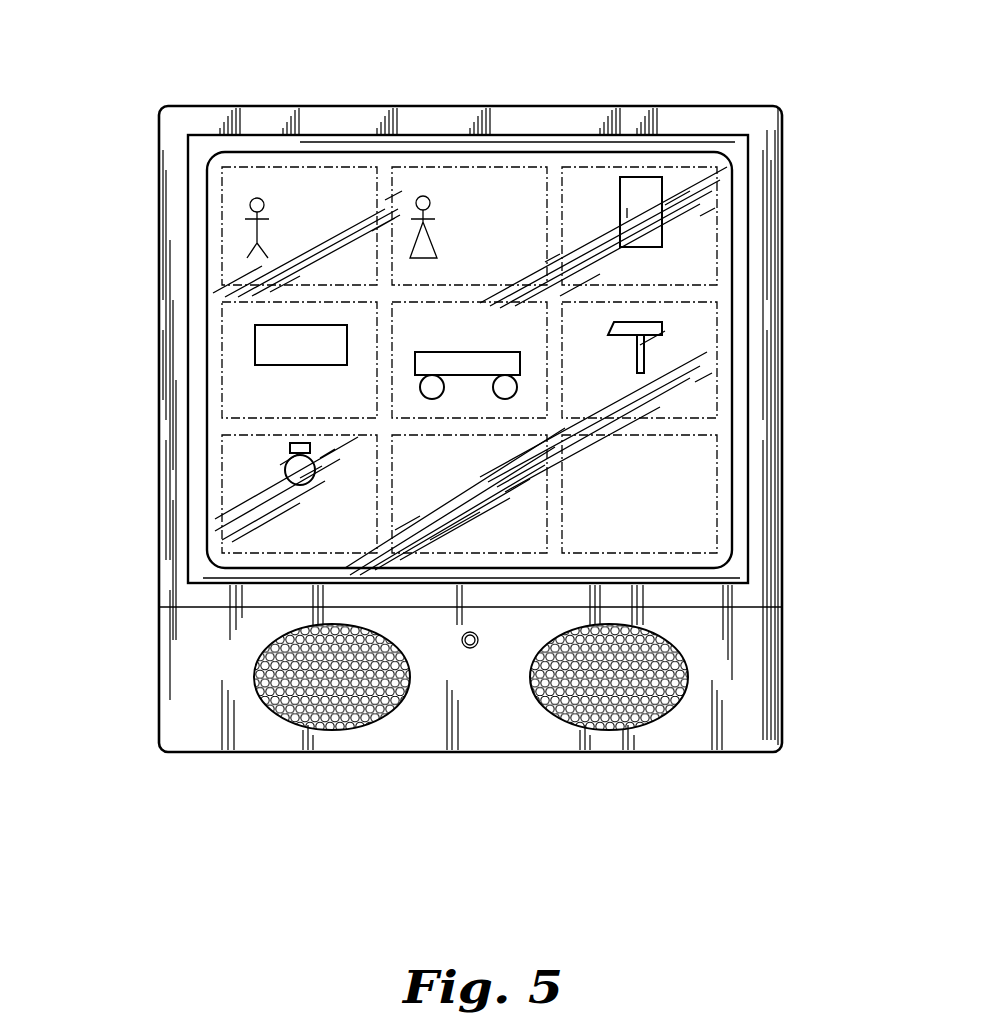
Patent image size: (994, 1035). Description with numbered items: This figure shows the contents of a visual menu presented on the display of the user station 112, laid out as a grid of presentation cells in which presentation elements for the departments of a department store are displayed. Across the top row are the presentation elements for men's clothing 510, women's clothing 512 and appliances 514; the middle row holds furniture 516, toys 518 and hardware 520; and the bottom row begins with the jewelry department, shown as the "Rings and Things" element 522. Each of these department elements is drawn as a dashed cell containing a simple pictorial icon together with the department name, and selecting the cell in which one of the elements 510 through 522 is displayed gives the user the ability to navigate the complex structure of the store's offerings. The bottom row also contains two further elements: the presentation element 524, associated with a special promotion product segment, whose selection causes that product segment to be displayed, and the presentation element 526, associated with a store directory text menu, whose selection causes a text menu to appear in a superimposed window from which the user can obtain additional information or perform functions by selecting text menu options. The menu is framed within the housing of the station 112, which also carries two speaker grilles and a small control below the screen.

The interactive kiosk display unit 112 is at (158, 251).
The men's clothing presentation element 510 is at (222, 182).
The women's clothing presentation element 512 is at (485, 167).
The appliances presentation element 514 is at (718, 187).
The furniture presentation element 516 is at (222, 348).
The toys presentation element 518 is at (548, 333).
The hardware presentation element 520 is at (718, 365).
The jewelry presentation element 522 is at (222, 472).
The special promotion presentation element 524 is at (443, 553).
The store directory presentation element 526 is at (718, 471).